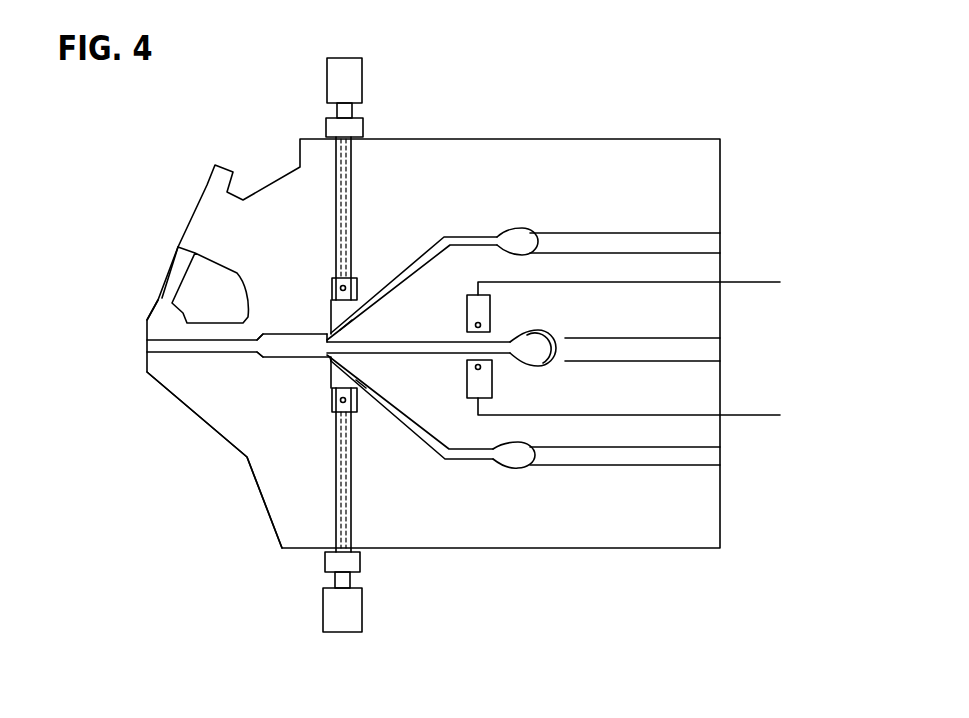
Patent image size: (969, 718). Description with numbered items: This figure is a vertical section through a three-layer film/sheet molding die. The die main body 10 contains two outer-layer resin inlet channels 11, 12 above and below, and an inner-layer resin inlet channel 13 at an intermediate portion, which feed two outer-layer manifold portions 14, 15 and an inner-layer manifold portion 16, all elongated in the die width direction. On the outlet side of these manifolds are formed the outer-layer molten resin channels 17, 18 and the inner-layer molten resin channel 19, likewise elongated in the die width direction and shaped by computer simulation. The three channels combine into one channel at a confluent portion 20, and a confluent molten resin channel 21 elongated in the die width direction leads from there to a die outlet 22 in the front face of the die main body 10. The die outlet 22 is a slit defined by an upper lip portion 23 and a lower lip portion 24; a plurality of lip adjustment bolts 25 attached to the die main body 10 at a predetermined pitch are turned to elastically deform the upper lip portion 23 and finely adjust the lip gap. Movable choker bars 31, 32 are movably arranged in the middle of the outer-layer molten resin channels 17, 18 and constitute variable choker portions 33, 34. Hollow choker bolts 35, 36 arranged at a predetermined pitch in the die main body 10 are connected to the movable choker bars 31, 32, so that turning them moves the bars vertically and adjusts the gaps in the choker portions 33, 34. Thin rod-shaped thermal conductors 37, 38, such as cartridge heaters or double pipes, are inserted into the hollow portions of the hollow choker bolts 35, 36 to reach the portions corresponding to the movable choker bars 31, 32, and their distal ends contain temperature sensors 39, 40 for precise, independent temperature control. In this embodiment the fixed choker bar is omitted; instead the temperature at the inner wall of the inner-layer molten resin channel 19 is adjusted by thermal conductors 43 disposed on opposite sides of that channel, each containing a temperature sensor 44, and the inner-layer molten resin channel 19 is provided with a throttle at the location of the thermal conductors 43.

The die main body 10 is at (658, 150).
The outer-layer resin inlet channel 11 is at (708, 242).
The outer-layer resin inlet channel 12 is at (710, 453).
The inner-layer resin inlet channel 13 is at (710, 348).
The outer-layer manifold portion 14 is at (522, 238).
The outer-layer manifold portion 15 is at (520, 457).
The inner-layer manifold portion 16 is at (545, 353).
The outer-layer molten resin channel 17 is at (405, 268).
The outer-layer molten resin channel 18 is at (418, 434).
The inner-layer molten resin channel 19 is at (405, 352).
The confluent portion 20 is at (325, 347).
The confluent molten resin channel 21 is at (278, 350).
The die outlet 22 is at (147, 343).
The upper lip portion 23 is at (150, 315).
The lower lip portion 24 is at (160, 368).
The lip adjustment bolt 25 is at (170, 272).
The movable choker bar 31 is at (330, 305).
The movable choker bar 32 is at (332, 380).
The variable choker portion 33 is at (357, 318).
The variable choker portion 34 is at (364, 382).
The hollow choker bolt 35 is at (333, 180).
The hollow choker bolt 36 is at (335, 500).
The thermal conductor 37 is at (358, 162).
The thermal conductor 38 is at (333, 527).
The temperature sensor 39 is at (330, 282).
The temperature sensor 40 is at (330, 415).
The thermal conductor 43 is at (475, 293).
The temperature sensor 44 is at (478, 325).